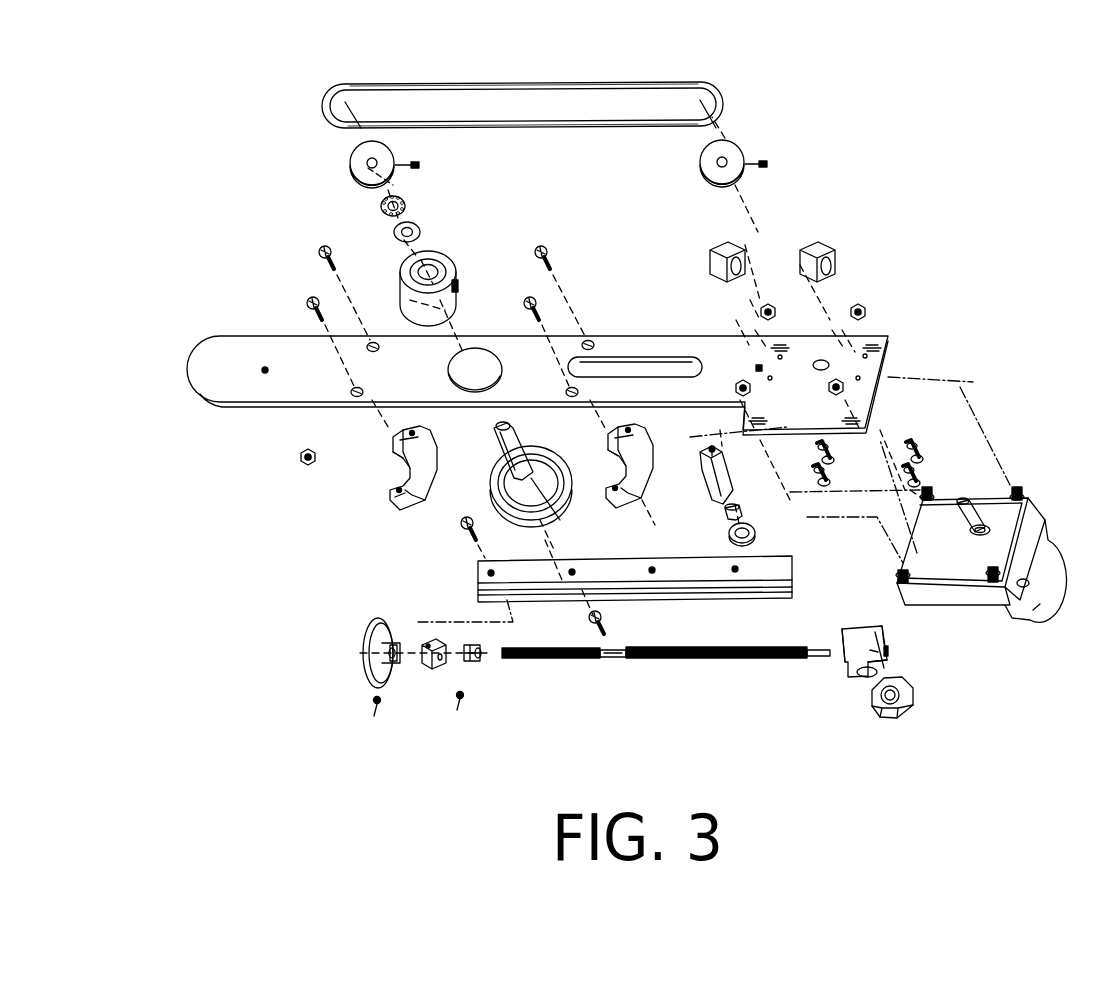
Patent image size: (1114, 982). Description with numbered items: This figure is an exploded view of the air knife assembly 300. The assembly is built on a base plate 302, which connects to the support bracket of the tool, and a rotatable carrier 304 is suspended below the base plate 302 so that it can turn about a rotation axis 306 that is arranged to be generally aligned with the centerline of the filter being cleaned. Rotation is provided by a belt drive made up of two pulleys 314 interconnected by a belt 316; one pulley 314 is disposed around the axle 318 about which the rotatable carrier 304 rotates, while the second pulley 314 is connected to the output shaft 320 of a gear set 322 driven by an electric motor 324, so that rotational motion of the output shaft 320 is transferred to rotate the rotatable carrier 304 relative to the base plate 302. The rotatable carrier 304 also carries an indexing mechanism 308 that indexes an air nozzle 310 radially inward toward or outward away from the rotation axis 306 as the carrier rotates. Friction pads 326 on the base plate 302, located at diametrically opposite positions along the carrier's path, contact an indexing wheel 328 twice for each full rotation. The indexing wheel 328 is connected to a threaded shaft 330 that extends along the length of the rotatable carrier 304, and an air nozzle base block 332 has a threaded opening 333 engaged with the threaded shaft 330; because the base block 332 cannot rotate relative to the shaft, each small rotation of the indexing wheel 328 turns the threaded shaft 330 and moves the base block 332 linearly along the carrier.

The air knife assembly 300 is at (888, 148).
The base plate 302 is at (223, 357).
The rotatable carrier 304 is at (697, 573).
The rotation axis 306 is at (560, 535).
The indexing mechanism 308 is at (612, 661).
The air nozzle 310 is at (906, 706).
The pulley 314 is at (362, 165).
The belt 316 is at (637, 83).
The axle 318 is at (500, 435).
The output shaft 320 is at (963, 500).
The gear set 322 is at (982, 593).
The electric motor 324 is at (1035, 590).
The friction pad 326 is at (395, 495).
The indexing wheel 328 is at (372, 670).
The threaded shaft 330 is at (670, 661).
The air nozzle base block 332 is at (853, 640).
The threaded opening 333 is at (890, 650).